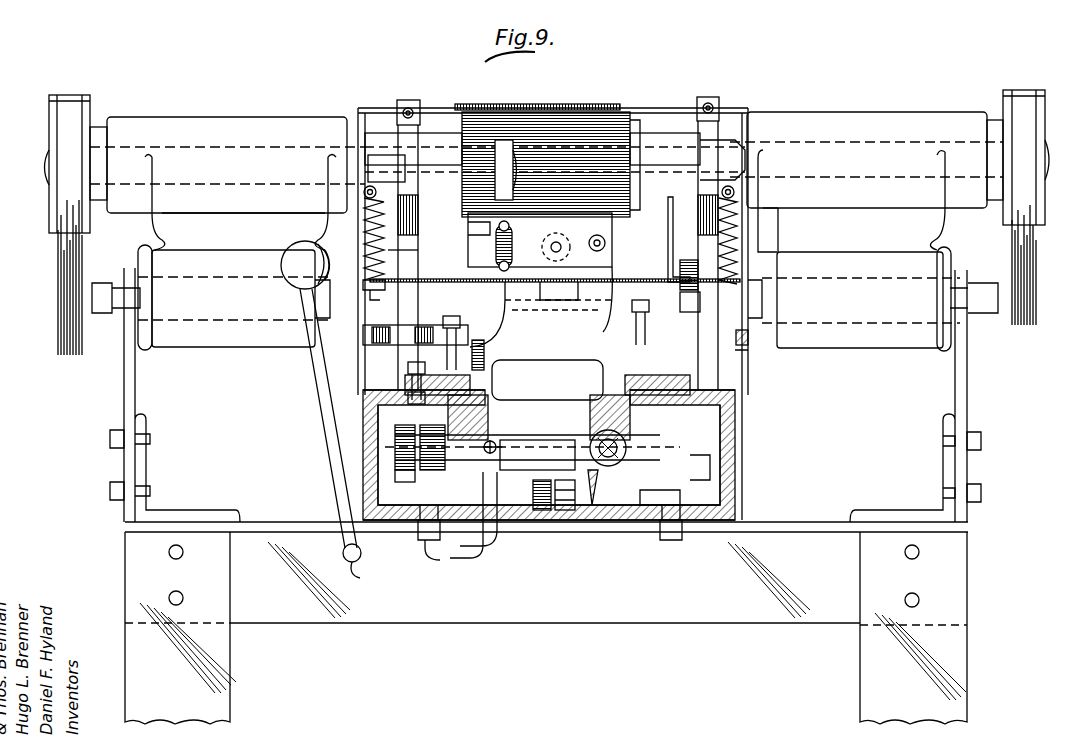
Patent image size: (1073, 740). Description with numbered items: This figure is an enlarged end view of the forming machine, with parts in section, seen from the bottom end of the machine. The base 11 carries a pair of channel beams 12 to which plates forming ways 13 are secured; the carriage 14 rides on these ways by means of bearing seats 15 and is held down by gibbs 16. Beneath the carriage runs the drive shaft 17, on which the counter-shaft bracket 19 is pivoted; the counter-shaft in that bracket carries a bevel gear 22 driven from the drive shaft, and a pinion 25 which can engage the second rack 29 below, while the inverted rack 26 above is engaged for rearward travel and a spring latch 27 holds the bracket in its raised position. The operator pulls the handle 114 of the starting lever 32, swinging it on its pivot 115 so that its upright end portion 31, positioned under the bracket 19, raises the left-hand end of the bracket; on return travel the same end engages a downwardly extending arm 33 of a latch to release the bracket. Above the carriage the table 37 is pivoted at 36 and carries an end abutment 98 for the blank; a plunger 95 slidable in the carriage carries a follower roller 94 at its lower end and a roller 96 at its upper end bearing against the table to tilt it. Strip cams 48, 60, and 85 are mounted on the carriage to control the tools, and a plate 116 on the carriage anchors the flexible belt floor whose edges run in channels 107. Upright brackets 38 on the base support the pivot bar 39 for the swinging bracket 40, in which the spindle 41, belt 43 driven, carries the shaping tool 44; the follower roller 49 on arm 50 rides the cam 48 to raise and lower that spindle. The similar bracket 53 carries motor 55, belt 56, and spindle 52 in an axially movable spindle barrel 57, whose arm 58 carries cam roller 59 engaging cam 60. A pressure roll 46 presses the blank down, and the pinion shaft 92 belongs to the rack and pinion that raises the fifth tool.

The base 11 is at (140, 644).
The beams 12 is at (370, 442).
The ways 13 is at (425, 398).
The carriage 14 is at (515, 300).
The bearing seats 15 is at (440, 368).
The gibbs 16 is at (470, 400).
The drive shaft 17 is at (626, 450).
The counter-shaft bracket 19 is at (518, 470).
The bevel gear 22 is at (600, 472).
The pinion 25 is at (400, 430).
The inverted rack 26 is at (480, 375).
The spring latch 27 is at (436, 470).
The second rack 29 is at (412, 482).
The upright end portion 31 is at (490, 512).
The starting lever 32 is at (435, 562).
The downwardly extending arm 33 is at (476, 499).
The pivot 36 is at (606, 242).
The table 37 is at (604, 264).
The upright brackets 38 is at (128, 383).
The pivot bar 39 is at (876, 326).
The swinging bracket 40 is at (918, 232).
The spindle 41 is at (885, 140).
The belt 43 is at (1025, 275).
The shaping tool 44 is at (597, 105).
The pressure roll 46 is at (593, 142).
The strip cam 48 is at (682, 310).
The follower roller 49 is at (686, 260).
The arm 50 is at (700, 202).
The spindle 52 is at (243, 145).
The bracket 53 is at (172, 226).
The motor 55 is at (230, 327).
The belt 56 is at (68, 278).
The spindle barrel 57 is at (430, 192).
The downwardly extending arm 58 is at (410, 249).
The cam roller 59 is at (415, 345).
The cam 60 is at (420, 345).
The strip cam 85 is at (736, 340).
The pinion shaft 92 is at (492, 238).
The follower roller 94 is at (540, 510).
The plunger 95 is at (548, 388).
The roller 96 is at (548, 236).
The end abutment 98 is at (600, 226).
The channels 107 is at (668, 280).
The handle 114 is at (290, 282).
The pivot 115 is at (345, 558).
The plate 116 is at (460, 274).